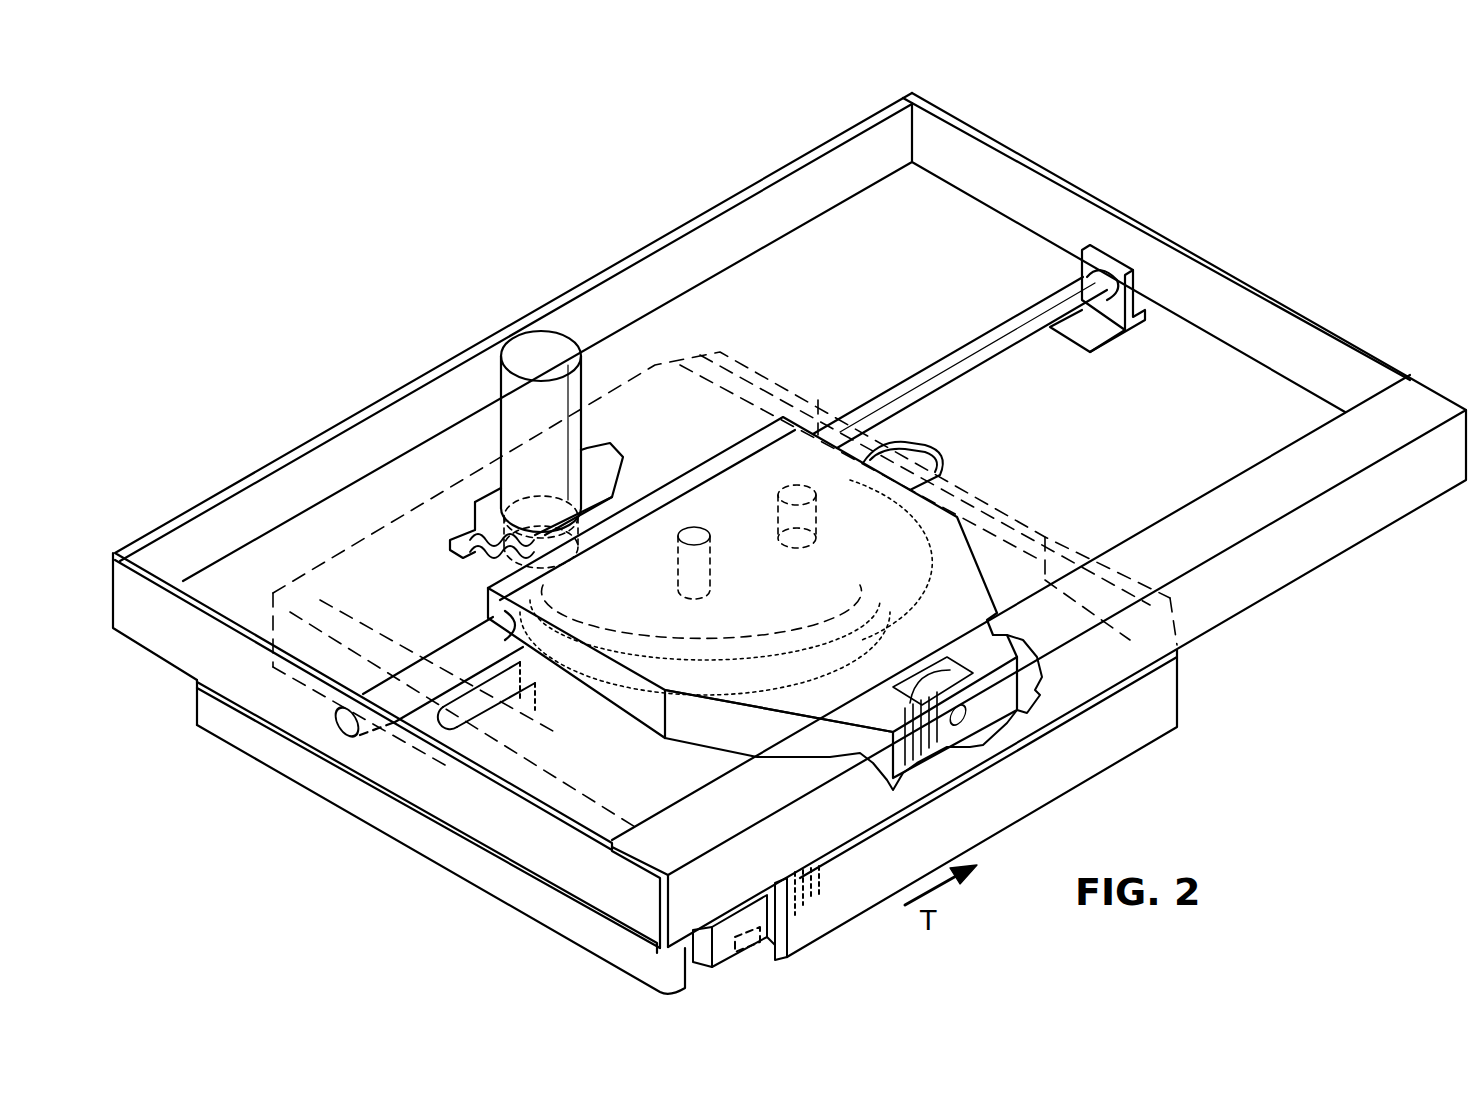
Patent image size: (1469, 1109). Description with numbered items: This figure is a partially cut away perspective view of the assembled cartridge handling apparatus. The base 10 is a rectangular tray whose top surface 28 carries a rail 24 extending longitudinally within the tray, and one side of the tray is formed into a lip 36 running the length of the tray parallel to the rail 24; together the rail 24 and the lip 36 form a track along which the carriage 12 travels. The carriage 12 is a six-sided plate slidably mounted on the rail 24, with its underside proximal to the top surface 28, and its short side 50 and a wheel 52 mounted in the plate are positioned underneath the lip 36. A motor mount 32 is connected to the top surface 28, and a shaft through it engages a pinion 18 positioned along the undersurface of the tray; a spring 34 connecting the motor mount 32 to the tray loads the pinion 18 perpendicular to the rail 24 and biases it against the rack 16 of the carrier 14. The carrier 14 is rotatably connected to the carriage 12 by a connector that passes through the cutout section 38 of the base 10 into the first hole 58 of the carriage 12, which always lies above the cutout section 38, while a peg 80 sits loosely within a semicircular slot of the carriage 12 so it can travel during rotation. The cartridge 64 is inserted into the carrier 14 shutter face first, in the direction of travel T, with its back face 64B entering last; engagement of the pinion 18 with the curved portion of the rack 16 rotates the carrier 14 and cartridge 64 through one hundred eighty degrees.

The base 10 is at (1243, 243).
The carriage 12 is at (920, 547).
The carrier 14 is at (1163, 710).
The rack 16 is at (815, 397).
The pinion 18 is at (505, 520).
The rail 24 is at (1005, 330).
The top surface 28 is at (980, 240).
The motor mount 32 is at (612, 453).
The spring 34 is at (505, 548).
The lip 36 is at (1268, 497).
The cutout section 38 is at (942, 447).
The short side 50 is at (985, 705).
The wheel 52 is at (915, 712).
The first hole 58 is at (740, 525).
The cartridge 64 is at (195, 703).
The back face 64B is at (470, 866).
The peg 80 is at (805, 497).